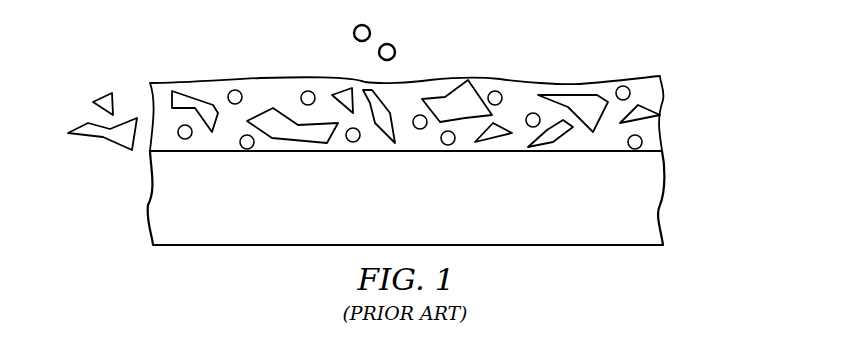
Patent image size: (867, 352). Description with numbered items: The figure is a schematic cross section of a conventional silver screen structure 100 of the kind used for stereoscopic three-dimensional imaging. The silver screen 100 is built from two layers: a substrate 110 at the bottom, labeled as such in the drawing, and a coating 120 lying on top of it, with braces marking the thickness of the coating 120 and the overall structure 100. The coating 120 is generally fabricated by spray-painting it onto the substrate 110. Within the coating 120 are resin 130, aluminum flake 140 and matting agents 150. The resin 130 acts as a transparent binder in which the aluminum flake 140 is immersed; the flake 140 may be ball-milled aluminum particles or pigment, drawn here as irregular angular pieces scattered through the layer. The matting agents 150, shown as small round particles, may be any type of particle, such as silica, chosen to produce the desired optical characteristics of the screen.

The conventional silver screen structure 100 is at (737, 72).
The substrate 110 is at (152, 198).
The coating 120 is at (677, 72).
The resin 130 is at (212, 92).
The aluminum flake 140 is at (262, 113).
The matting agents 150 is at (394, 46).